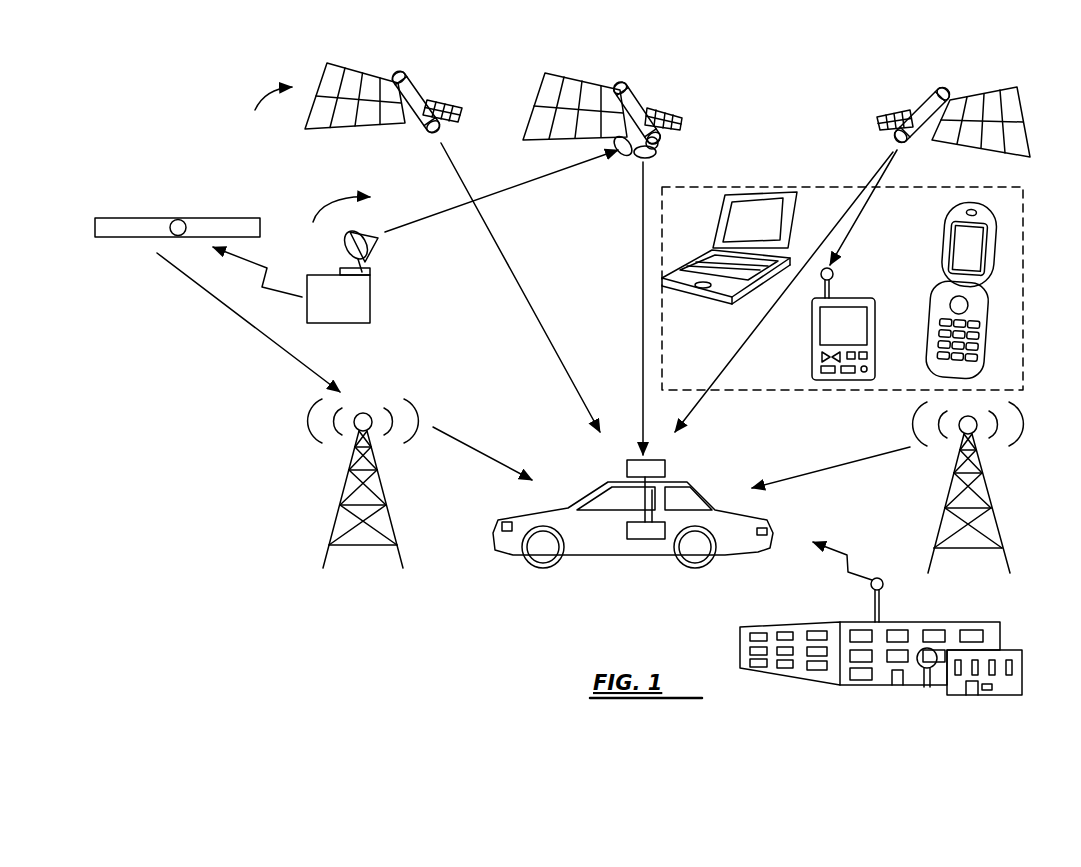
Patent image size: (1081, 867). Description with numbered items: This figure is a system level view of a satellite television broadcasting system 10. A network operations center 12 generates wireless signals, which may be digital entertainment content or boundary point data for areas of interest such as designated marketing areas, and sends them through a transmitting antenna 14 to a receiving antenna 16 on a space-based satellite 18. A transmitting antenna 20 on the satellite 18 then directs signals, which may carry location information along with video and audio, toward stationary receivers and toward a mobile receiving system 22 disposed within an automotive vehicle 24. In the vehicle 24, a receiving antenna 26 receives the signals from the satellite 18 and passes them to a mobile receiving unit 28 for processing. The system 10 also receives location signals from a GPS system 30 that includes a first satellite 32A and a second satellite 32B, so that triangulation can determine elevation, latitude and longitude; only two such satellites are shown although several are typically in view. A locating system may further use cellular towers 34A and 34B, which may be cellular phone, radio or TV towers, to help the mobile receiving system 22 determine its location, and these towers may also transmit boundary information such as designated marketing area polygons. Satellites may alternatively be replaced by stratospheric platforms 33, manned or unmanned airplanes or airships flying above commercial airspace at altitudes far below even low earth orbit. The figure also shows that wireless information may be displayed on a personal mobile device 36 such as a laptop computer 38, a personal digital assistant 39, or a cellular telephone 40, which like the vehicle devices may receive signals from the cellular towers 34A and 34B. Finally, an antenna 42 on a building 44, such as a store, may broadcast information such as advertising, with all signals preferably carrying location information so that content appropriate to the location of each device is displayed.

The satellite television broadcasting system 10 is at (331, 226).
The network operations center 12 is at (372, 302).
The transmitting antenna 14 is at (375, 258).
The receiving antenna 16 is at (620, 147).
The satellite 18 is at (640, 102).
The transmitting antenna 20 is at (653, 152).
The mobile receiving system 22 is at (650, 498).
The automotive vehicle 24 is at (773, 523).
The receiving antenna 26 is at (625, 470).
The mobile receiving unit 28 is at (650, 539).
The GPS system 30 is at (266, 112).
The first satellite 32A is at (417, 88).
The second satellite 32B is at (930, 93).
The stratospheric platforms 33 is at (215, 218).
The cellular tower 34A is at (385, 488).
The cellular tower 34B is at (947, 495).
The personal mobile device 36 is at (973, 186).
The laptop computer 38 is at (697, 297).
The personal digital assistant 39 is at (863, 297).
The cellular telephone 40 is at (935, 267).
The antenna 42 is at (887, 585).
The building 44 is at (957, 622).